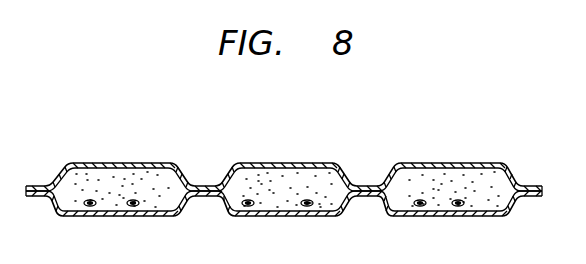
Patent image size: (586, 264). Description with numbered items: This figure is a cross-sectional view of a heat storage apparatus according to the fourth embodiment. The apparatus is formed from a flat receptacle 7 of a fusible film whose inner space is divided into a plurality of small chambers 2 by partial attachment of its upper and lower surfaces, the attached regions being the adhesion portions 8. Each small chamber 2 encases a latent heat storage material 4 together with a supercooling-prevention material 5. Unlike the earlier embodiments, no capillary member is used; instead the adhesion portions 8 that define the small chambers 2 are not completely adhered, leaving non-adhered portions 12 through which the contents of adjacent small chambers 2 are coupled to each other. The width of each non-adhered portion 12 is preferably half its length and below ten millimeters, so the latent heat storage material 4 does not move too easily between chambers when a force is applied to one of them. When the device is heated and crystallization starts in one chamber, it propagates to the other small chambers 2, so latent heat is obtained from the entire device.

The small chamber 2 is at (132, 148).
The latent heat storage material 4 is at (489, 183).
The supercooling-prevention material 5 is at (92, 207).
The non-adhered portion 12 is at (200, 197).
The adhesion portion 8 is at (362, 197).
The flat receptacle 7 is at (433, 217).